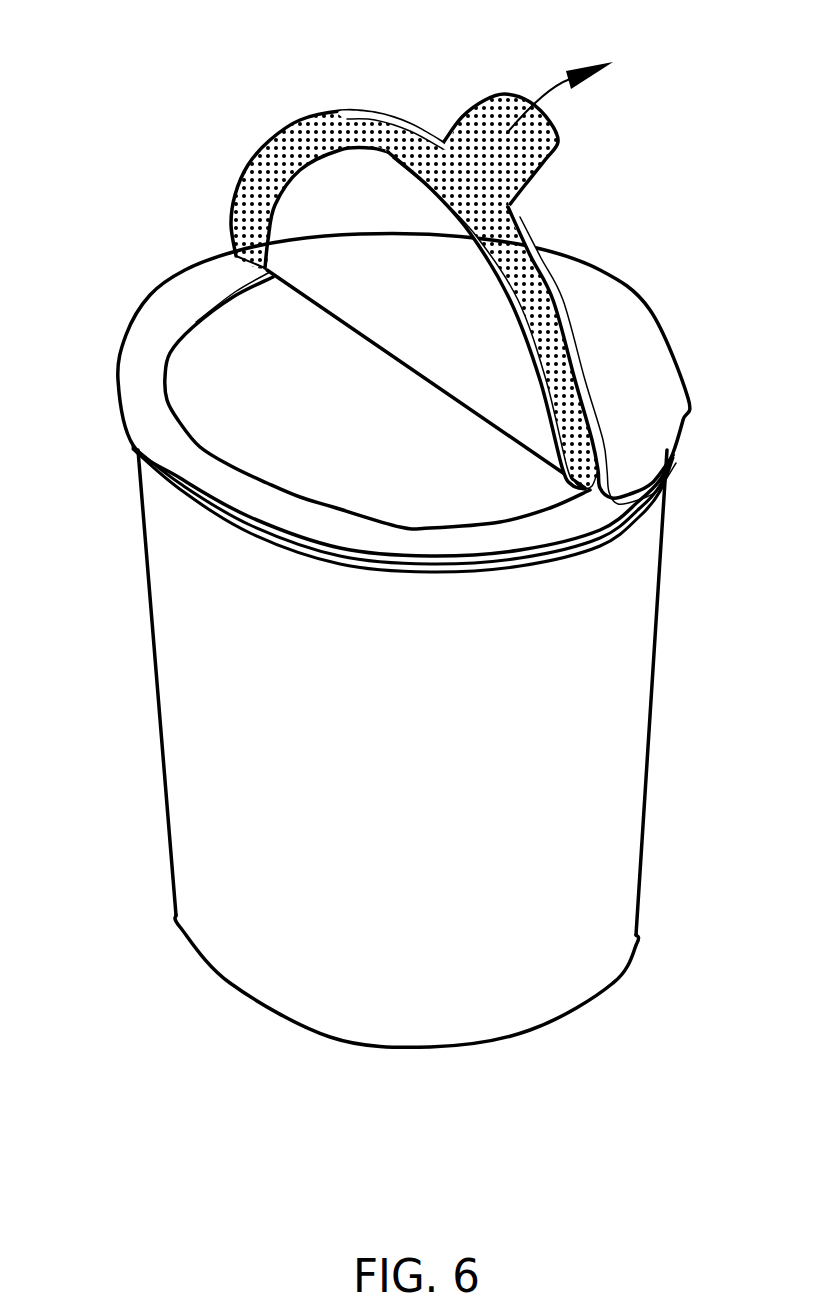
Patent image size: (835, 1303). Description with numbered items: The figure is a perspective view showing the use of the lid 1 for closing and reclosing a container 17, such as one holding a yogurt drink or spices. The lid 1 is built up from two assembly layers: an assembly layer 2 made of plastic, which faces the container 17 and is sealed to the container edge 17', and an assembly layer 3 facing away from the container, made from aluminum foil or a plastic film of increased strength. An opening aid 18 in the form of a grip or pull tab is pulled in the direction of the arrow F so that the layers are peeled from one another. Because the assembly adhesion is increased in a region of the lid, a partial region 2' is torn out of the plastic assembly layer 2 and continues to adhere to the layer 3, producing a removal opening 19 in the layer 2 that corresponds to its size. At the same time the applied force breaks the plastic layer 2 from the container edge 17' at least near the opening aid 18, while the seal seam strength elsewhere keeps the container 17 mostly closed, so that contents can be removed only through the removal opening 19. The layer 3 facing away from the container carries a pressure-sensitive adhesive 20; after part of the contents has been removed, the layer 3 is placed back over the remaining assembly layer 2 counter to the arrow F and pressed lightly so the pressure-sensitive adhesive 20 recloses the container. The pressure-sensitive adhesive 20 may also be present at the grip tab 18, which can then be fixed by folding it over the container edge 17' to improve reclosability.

The lid 1 is at (409, 523).
The assembly layer 2 is at (331, 374).
The partial region 2' is at (426, 248).
The assembly layer 3 is at (523, 233).
The container 17 is at (457, 748).
The container edge 17' is at (466, 509).
The opening aid 18 is at (557, 142).
The removal opening 19 is at (148, 385).
The pressure-sensitive adhesive 20 is at (290, 140).